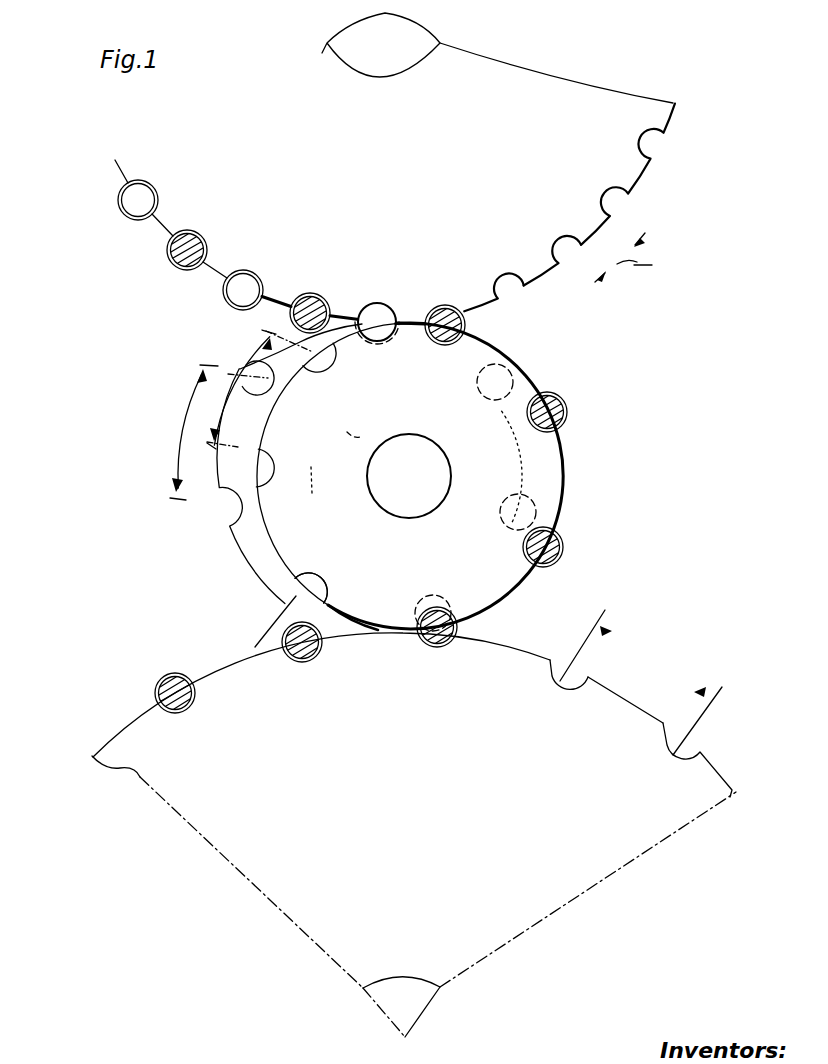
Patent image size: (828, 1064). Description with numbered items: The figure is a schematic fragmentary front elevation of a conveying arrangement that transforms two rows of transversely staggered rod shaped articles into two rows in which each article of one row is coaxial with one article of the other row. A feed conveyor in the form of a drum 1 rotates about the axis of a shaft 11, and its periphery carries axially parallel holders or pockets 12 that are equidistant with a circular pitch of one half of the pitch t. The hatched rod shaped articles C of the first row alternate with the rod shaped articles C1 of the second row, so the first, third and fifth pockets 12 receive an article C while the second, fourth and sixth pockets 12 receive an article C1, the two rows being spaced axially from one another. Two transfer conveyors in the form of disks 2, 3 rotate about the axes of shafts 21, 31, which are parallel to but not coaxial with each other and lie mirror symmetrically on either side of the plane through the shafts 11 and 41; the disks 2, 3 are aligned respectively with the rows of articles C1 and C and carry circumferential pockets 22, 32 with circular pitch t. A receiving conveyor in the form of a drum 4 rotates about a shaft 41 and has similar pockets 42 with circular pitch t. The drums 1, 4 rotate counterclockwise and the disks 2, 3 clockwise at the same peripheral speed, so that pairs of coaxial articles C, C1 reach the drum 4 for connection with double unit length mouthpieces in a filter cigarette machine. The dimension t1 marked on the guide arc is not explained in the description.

The drum 1 is at (388, 192).
The shaft 11 is at (392, 52).
The pockets 12 is at (522, 289).
The disk 2 is at (250, 576).
The shaft 21 is at (342, 433).
The pockets 22 is at (258, 638).
The disk 3 is at (399, 398).
The shaft 31 is at (452, 481).
The pockets 32 is at (293, 600).
The drum 4 is at (422, 850).
The shaft 41 is at (424, 1012).
The pockets 42 is at (552, 682).
The rod shaped articles C is at (318, 300).
The rod shaped articles C1 is at (250, 290).
The circular pitch t is at (181, 438).
The guide pitch t1 is at (241, 389).